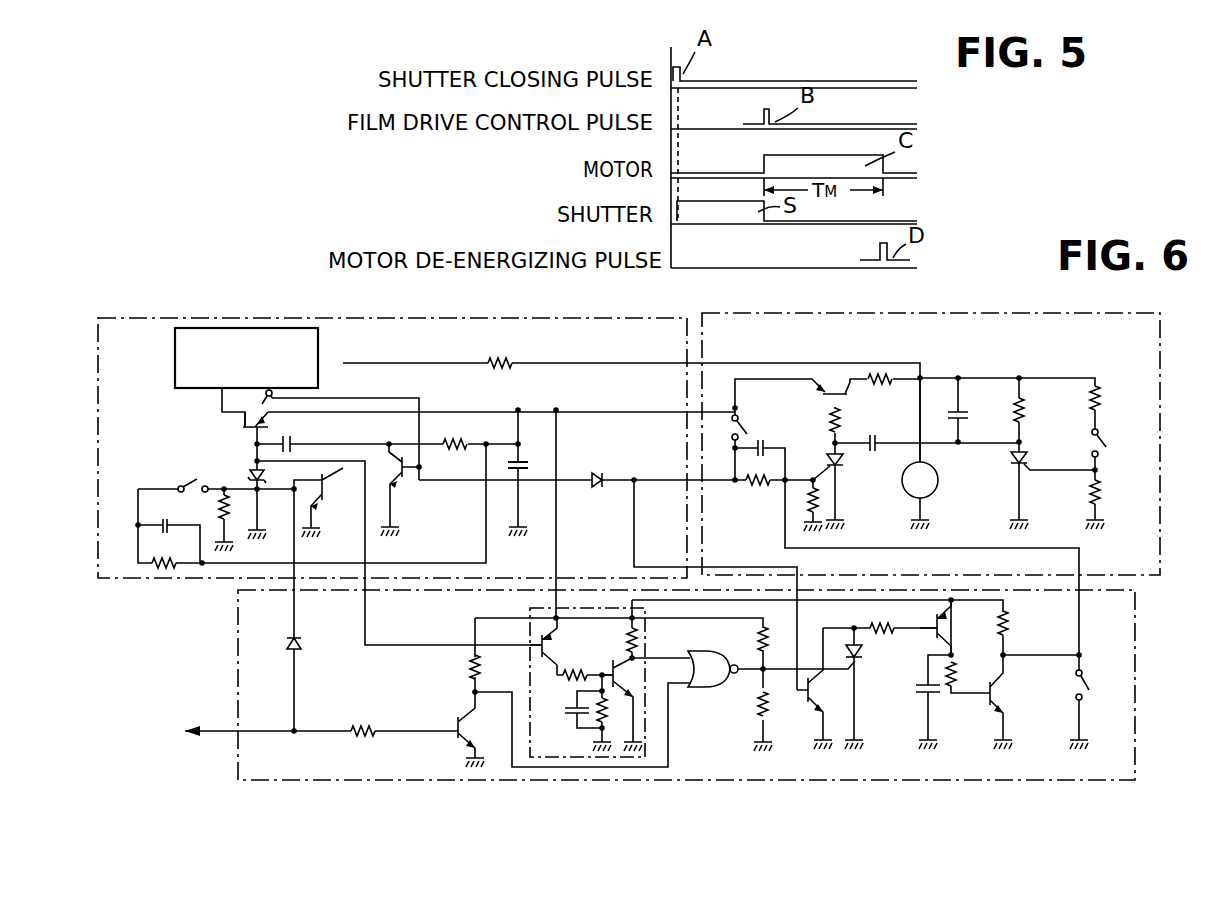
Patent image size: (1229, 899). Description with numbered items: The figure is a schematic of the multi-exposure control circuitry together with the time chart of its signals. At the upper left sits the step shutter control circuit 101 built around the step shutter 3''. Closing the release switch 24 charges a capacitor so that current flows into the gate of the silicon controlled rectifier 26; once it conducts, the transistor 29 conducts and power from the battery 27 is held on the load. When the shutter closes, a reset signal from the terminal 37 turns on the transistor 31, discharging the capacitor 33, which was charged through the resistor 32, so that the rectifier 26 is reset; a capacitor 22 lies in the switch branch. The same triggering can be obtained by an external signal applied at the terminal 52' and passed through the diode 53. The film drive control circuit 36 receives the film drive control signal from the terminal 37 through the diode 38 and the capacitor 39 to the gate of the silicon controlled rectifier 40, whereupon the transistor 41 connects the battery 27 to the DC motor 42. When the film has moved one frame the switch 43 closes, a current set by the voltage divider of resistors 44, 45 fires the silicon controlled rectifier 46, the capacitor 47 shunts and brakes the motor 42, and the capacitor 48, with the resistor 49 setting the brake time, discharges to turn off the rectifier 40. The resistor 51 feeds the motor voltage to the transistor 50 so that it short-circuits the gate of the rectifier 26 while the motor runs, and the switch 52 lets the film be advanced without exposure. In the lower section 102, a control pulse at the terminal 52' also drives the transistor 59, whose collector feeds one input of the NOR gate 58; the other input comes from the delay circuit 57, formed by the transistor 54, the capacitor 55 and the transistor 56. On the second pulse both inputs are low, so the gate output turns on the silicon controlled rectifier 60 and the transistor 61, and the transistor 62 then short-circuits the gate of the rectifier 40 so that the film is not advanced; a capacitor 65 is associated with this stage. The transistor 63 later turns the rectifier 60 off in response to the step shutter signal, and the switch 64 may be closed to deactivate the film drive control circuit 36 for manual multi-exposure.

The step shutter 3'' is at (219, 358).
The step shutter control circuit 101 is at (263, 318).
The film drive control circuit 36 is at (1020, 313).
The film drive control circuit section 102 is at (238, 612).
The delay circuit 57 is at (530, 620).
The transistor 29 is at (243, 423).
The output terminal 37 is at (266, 394).
The capacitor 33 is at (292, 438).
The switch 24 is at (185, 486).
The capacitor 22 is at (172, 517).
The silicon controlled rectifier 26 is at (250, 477).
The transistor 50 is at (315, 495).
The transistor 31 is at (395, 482).
The resistor 32 is at (457, 438).
The battery 27 is at (520, 460).
The diode 38 is at (598, 490).
The resistor 51 is at (513, 357).
The switch 52 is at (763, 414).
The transistor 41 is at (822, 380).
The capacitor 48 is at (872, 434).
The capacitor 39 is at (762, 438).
The silicon controlled rectifier 40 is at (845, 461).
The DC motor 42 is at (938, 488).
The capacitor 47 is at (968, 410).
The resistor 49 is at (1026, 405).
The silicon controlled rectifier 46 is at (1026, 466).
The resistor 44 is at (1103, 396).
The switch 43 is at (1103, 441).
The resistor 45 is at (1104, 492).
The diode 53 is at (300, 647).
The terminal 52' is at (268, 745).
The transistor 59 is at (455, 722).
The transistor 54 is at (553, 643).
The transistor 56 is at (622, 667).
The capacitor 55 is at (565, 709).
The NOR gate 58 is at (700, 688).
The transistor 63 is at (806, 704).
The silicon controlled rectifier 60 is at (857, 660).
The transistor 61 is at (952, 630).
The capacitor 65 is at (920, 694).
The transistor 62 is at (1000, 697).
The switch 64 is at (1076, 675).